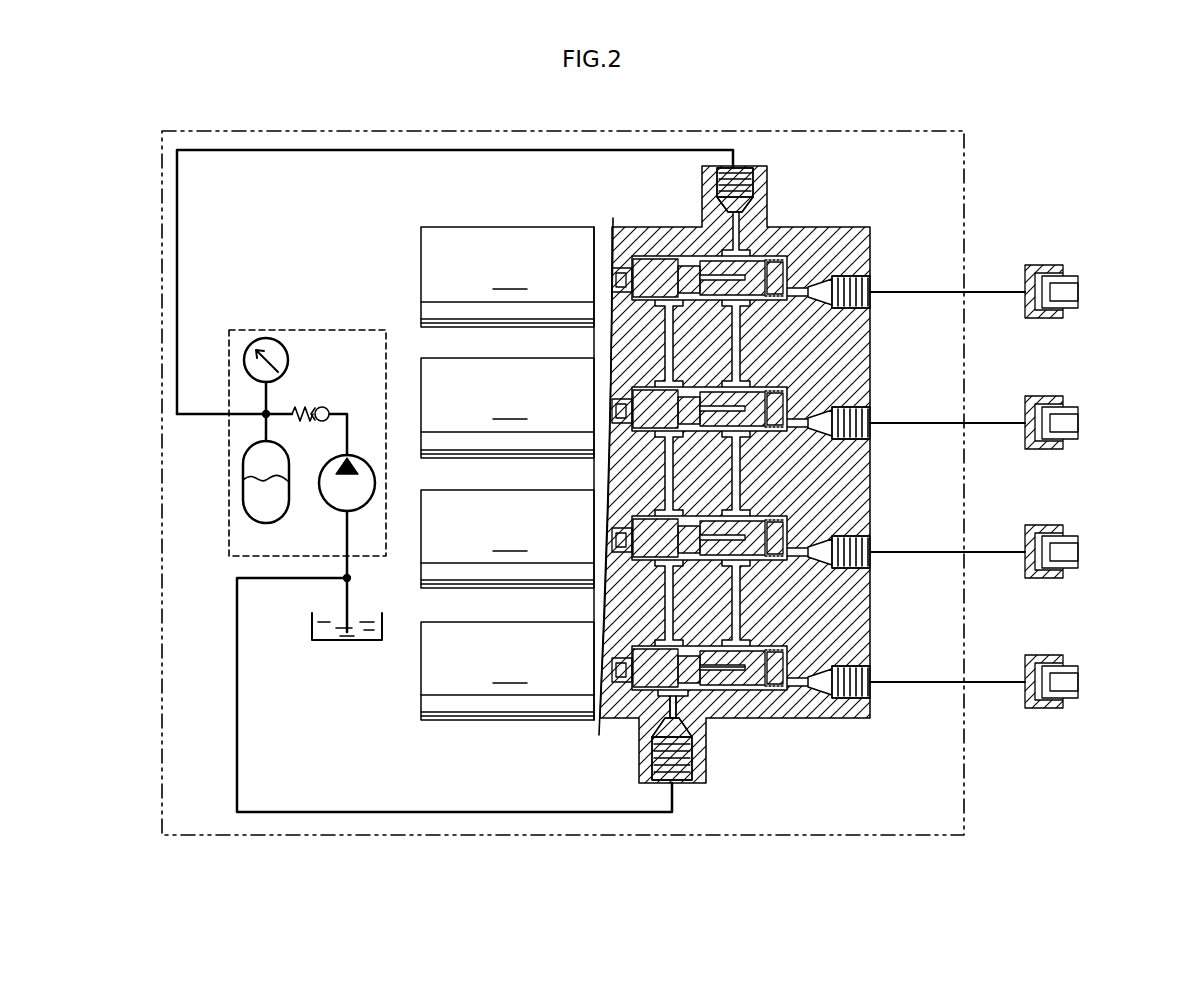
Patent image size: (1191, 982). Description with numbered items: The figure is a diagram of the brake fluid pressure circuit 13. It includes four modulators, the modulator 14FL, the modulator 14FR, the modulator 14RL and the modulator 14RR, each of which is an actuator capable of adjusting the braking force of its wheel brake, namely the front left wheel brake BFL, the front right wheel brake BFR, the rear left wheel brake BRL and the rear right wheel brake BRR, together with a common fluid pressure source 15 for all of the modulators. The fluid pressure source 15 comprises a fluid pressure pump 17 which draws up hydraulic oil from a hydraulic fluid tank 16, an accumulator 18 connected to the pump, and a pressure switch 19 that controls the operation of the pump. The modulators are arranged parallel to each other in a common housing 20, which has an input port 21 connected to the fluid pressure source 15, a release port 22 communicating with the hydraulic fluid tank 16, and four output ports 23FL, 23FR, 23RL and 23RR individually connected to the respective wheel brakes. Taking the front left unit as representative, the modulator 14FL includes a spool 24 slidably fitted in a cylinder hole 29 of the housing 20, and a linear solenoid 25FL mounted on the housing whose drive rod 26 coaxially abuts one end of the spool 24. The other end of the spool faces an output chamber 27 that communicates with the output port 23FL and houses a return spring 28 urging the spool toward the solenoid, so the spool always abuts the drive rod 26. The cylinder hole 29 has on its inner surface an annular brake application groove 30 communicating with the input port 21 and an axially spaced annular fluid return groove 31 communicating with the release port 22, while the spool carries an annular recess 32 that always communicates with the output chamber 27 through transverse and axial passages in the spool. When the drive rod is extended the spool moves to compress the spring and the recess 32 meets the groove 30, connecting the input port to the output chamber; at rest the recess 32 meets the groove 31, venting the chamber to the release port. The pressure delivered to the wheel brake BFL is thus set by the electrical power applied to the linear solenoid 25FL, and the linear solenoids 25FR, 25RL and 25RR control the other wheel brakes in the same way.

The brake fluid pressure circuit 13 is at (905, 130).
The modulator 14RR is at (878, 288).
The modulator 14RL is at (880, 419).
The modulator 14FR is at (880, 548).
The modulator 14FL is at (880, 680).
The fluid pressure source 15 is at (281, 427).
The hydraulic fluid tank 16 is at (313, 628).
The fluid pressure pump 17 is at (333, 498).
The accumulator 18 is at (283, 480).
The pressure switch 19 is at (288, 356).
The housing 20 is at (827, 233).
The input port 21 is at (745, 172).
The release port 22 is at (672, 772).
The output port 23RR is at (868, 303).
The output port 23RL is at (868, 434).
The output port 23FR is at (868, 563).
The output port 23FL is at (868, 693).
The spool 24 is at (652, 723).
The linear solenoid 25RR is at (507, 277).
The linear solenoid 25RL is at (507, 408).
The linear solenoid 25FR is at (507, 539).
The linear solenoid 25FL is at (507, 671).
The drive rod 26 is at (613, 672).
The output chamber 27 is at (777, 690).
The return spring 28 is at (775, 692).
The cylinder hole 29 is at (652, 652).
The annular brake application groove 30 is at (732, 697).
The annular fluid return groove 31 is at (680, 697).
The annular recess 32 is at (698, 650).
The rear right wheel brake BRR is at (1086, 290).
The rear left wheel brake BRL is at (1086, 421).
The front right wheel brake BFR is at (1086, 550).
The front left wheel brake BFL is at (1086, 680).